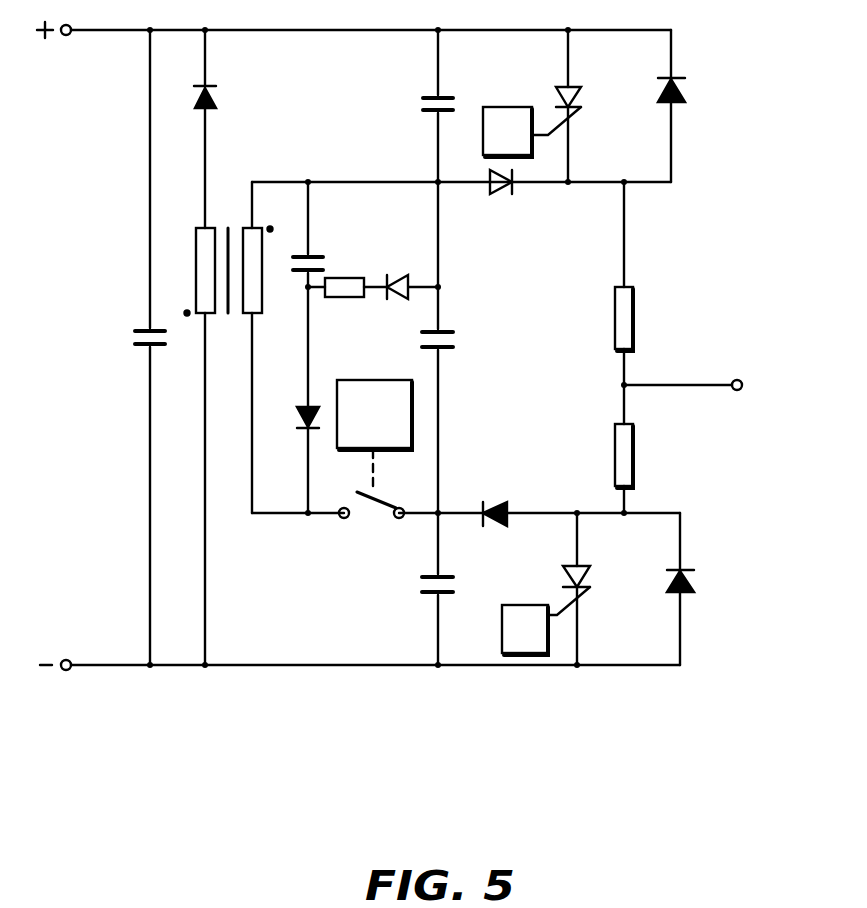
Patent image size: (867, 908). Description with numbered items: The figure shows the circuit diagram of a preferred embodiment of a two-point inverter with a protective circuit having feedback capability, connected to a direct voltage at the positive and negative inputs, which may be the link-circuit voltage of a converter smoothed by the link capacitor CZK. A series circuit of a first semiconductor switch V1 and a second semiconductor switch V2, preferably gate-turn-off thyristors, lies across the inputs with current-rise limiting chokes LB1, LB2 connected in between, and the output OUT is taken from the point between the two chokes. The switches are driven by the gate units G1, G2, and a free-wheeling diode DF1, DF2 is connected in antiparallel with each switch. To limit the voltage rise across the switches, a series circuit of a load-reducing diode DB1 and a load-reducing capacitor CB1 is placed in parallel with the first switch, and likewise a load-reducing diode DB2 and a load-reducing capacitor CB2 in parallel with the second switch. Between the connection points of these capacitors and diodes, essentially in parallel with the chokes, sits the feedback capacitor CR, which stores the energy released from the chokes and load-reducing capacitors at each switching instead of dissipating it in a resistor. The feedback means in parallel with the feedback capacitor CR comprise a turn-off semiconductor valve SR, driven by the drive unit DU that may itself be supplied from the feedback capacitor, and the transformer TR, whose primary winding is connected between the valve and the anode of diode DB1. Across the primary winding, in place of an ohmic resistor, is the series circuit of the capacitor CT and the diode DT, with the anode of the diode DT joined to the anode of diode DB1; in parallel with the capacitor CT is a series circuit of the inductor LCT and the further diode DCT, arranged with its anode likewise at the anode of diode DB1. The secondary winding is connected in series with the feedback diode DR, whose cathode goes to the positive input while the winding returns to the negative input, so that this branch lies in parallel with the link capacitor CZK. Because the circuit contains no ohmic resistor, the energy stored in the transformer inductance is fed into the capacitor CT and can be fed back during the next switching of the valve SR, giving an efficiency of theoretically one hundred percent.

The link capacitor CZK is at (120, 347).
The feedback diode DR is at (228, 129).
The transformer TR is at (215, 423).
The capacitor CT is at (316, 294).
The inductor LCT is at (347, 308).
The further diode DCT is at (412, 262).
The diode DT is at (290, 459).
The drive unit DU is at (374, 435).
The semiconductor valve SR is at (371, 525).
The load-reducing capacitor CB1 is at (412, 106).
The feedback capacitor CR is at (457, 347).
The load-reducing capacitor CB2 is at (409, 589).
The load-reducing diode DB1 is at (504, 204).
The load-reducing diode DB2 is at (487, 489).
The first semiconductor switch V1 is at (541, 106).
The gate unit G1 is at (507, 132).
The free-wheeling diode DF1 is at (697, 106).
The current-rise limiting choke LB1 is at (646, 303).
The output OUT is at (705, 388).
The current-rise limiting choke LB2 is at (646, 468).
The second semiconductor switch V2 is at (555, 589).
The gate unit G2 is at (525, 630).
The free-wheeling diode DF2 is at (705, 589).